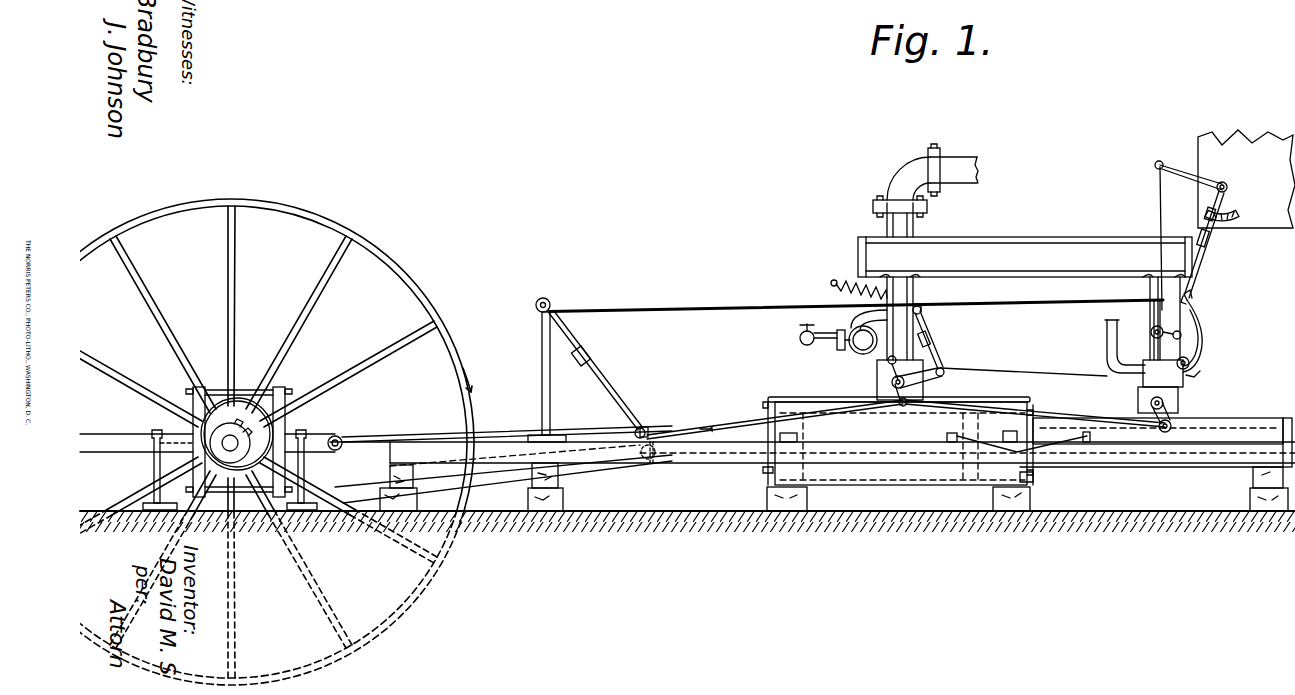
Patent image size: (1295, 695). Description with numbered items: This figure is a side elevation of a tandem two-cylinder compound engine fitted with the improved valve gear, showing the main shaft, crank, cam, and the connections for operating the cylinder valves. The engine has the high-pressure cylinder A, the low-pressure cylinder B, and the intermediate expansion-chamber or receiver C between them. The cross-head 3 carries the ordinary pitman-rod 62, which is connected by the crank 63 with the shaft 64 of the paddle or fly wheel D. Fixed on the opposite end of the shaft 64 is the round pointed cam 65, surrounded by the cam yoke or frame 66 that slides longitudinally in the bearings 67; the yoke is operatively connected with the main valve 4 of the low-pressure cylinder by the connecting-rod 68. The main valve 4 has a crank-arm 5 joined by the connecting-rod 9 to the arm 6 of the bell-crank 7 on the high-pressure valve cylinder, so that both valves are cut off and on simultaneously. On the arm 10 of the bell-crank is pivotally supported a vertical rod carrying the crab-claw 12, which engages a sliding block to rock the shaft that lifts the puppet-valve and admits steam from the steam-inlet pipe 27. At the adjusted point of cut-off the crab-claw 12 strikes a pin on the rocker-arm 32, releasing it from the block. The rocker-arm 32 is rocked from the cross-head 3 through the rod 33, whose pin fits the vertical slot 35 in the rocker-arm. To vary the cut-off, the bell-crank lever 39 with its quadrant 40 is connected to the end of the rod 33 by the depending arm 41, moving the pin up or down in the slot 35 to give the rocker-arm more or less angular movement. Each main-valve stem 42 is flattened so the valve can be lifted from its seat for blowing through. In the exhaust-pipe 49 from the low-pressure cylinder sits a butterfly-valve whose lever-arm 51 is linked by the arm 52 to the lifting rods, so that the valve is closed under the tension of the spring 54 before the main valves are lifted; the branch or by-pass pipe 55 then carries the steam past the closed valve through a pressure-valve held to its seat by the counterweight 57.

The paddle or fly wheel D is at (306, 213).
The shaft 64 is at (230, 441).
The round pointed cam 65 is at (265, 437).
The cam yoke or frame 66 is at (287, 386).
The bearings 67 is at (155, 435).
The crank 63 is at (303, 483).
The pitman-rod 62 is at (494, 474).
The cross-head 3 is at (677, 445).
The connecting-rod 68 is at (688, 430).
The connecting-rod 9 is at (1053, 420).
The rod 33 is at (762, 308).
The low-pressure cylinder B is at (926, 441).
The high-pressure cylinder A is at (1253, 416).
The intermediate expansion-chamber or receiver C is at (1033, 245).
The exhaust-pipe 49 is at (915, 227).
The crank-arm 5 is at (878, 393).
The main valve 4 is at (878, 381).
The main-valve stem 42 is at (915, 387).
The arm 52 is at (938, 347).
The lever-arm 51 is at (921, 311).
The branch or by-pass pipe 55 is at (855, 318).
The counterweight 57 is at (813, 343).
The spring 54 is at (848, 292).
The steam-inlet pipe 27 is at (1107, 334).
The crab-claw 12 is at (1190, 371).
The bell-crank 7 is at (1140, 396).
The arm 10 is at (1173, 405).
The arm 6 is at (1173, 419).
The rocker-arm 32 is at (1153, 332).
The vertical slot 35 is at (1156, 318).
The depending arm 41 is at (1160, 190).
The quadrant 40 is at (1225, 212).
The bell-crank lever 39 is at (1203, 258).